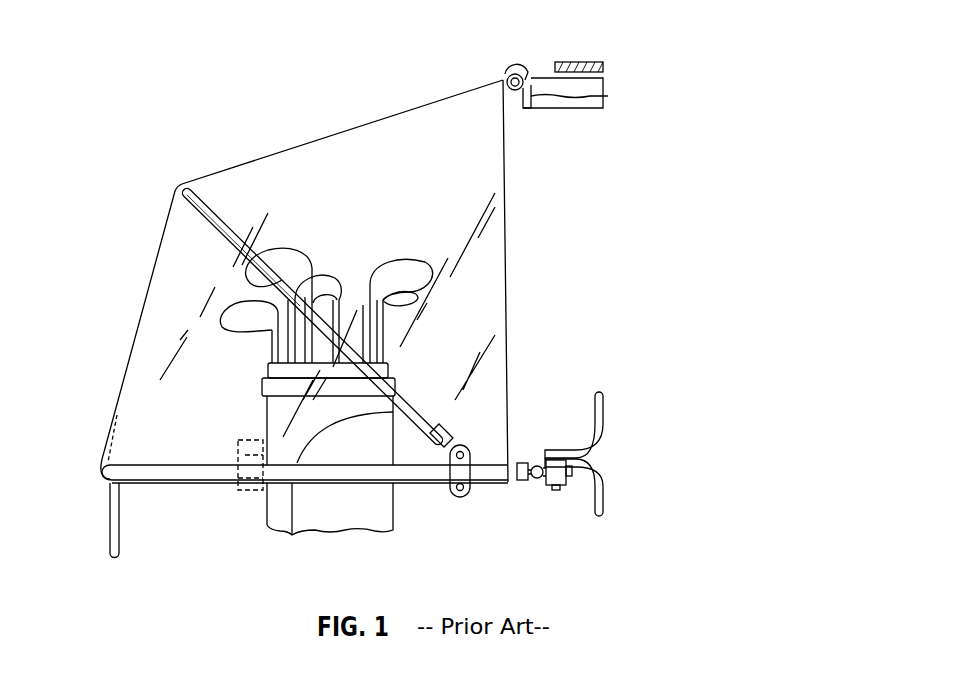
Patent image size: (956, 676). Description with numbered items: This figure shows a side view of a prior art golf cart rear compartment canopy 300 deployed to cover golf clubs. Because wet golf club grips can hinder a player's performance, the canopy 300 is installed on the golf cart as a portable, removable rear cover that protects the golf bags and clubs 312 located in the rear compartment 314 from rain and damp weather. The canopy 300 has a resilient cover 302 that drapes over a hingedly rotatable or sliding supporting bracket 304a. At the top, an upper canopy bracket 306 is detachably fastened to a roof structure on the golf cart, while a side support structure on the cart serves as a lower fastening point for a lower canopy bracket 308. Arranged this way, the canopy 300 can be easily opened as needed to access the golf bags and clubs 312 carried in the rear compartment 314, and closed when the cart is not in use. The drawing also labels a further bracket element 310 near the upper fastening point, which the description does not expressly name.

The rear compartment canopy 300 is at (106, 94).
The resilient cover 302 is at (140, 308).
The supporting bracket 304a is at (233, 237).
The upper canopy bracket 306 is at (518, 65).
The lower canopy bracket 308 is at (563, 450).
The hinge bracket 310 is at (594, 62).
The golf bags and clubs 312 is at (280, 520).
The rear compartment 314 is at (110, 535).